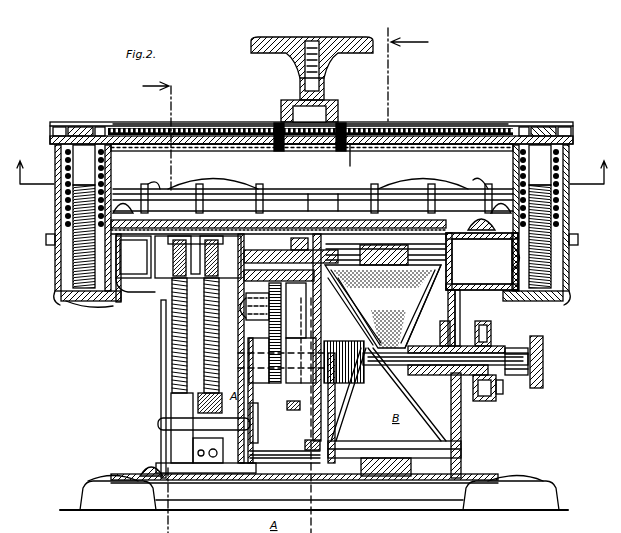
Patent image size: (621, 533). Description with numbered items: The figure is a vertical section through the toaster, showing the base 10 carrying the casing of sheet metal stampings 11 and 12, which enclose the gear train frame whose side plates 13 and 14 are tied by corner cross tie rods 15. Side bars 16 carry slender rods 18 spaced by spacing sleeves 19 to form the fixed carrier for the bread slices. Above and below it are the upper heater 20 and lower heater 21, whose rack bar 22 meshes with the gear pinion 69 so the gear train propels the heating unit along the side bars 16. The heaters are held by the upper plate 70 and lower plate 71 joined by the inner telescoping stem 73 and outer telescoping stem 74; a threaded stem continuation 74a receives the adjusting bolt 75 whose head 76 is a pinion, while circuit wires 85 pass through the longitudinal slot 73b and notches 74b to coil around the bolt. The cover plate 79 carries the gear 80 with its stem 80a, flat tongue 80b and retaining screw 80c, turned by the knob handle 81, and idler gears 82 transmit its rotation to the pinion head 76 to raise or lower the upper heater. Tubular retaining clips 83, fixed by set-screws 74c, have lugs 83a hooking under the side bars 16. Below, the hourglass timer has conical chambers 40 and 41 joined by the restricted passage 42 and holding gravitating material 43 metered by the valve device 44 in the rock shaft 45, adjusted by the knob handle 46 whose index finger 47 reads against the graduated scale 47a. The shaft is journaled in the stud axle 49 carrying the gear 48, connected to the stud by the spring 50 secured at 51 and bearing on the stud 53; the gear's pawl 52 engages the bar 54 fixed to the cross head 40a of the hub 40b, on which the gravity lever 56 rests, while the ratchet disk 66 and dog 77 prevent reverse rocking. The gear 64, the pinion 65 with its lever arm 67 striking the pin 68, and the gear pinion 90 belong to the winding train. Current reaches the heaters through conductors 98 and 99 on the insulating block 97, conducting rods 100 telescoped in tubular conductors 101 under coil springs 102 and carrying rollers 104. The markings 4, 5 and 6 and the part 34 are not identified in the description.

The section line 4 is at (315, 216).
The section line 5 is at (415, 75).
The section line 6 is at (149, 135).
The base 10 is at (490, 470).
The sheet metal stamping 11 is at (163, 388).
The sheet metal stamping 12 is at (480, 416).
The side plate 13 is at (253, 348).
The side plate 14 is at (453, 418).
The corner cross tie rod 15 is at (246, 510).
The side bar 16 is at (65, 298).
The slender rod 18 is at (313, 188).
The spacing sleeve 19 is at (318, 180).
The upper heater 20 is at (345, 143).
The lower heater 21 is at (316, 189).
The rack bar 22 is at (290, 180).
The bottom plate 34 is at (394, 458).
The conical chamber 40 is at (448, 296).
The cross head 40a is at (388, 325).
The hub 40b is at (353, 408).
The conical chamber 41 is at (378, 450).
The restricted passage 42 is at (420, 290).
The gravitating material 43 is at (362, 311).
The valve device 44 is at (388, 394).
The rock shaft 45 is at (448, 390).
The knob handle 46 is at (538, 340).
The index finger 47 is at (500, 340).
The graduated scale 47a is at (480, 313).
The gear 48 is at (306, 412).
The stud axle 49 is at (283, 351).
The spring 50 is at (324, 415).
The spring securing point 51 is at (352, 330).
The spring-actuated pawl 52 is at (280, 451).
The stud 53 is at (306, 310).
The diametrically extending bar 54 is at (350, 311).
The lever 56 is at (447, 318).
The gear 64 is at (232, 326).
The pinion 65 is at (262, 423).
The ratchet disk 66 is at (516, 395).
The lever arm 67 is at (295, 408).
The pin 68 is at (275, 375).
The gear pinion 69 is at (338, 182).
The upper plate 70 is at (508, 128).
The lower plate 71 is at (483, 261).
The inner telescoping tubular stem 73 is at (47, 200).
The longitudinal slot 73b is at (104, 164).
The outer telescoping tubular stem 74 is at (53, 214).
The threaded tubular stem continuation 74a is at (47, 285).
The notch 74b is at (112, 128).
The set-screw 74c is at (38, 231).
The threaded tie and adjusting bolt 75 is at (53, 248).
The bolt head 76 is at (78, 118).
The dog 77 is at (372, 262).
The cover plate 79 is at (465, 114).
The gear 80 is at (345, 126).
The stem and journal 80a is at (290, 106).
The flat tongue 80b is at (312, 130).
The headed retaining screw 80c is at (303, 34).
The operating knob handle 81 is at (290, 60).
The idler gear 82 is at (195, 122).
The tubular retaining clip 83 is at (100, 294).
The lug 83a is at (106, 298).
The circuit wire 85 is at (47, 146).
The gear pinion 90 is at (466, 205).
The insulating block 97 is at (198, 465).
The conductor 98 is at (190, 447).
The conductor 99 is at (192, 401).
The conducting rod 100 is at (165, 362).
The tubular conductor 101 is at (172, 312).
The coil spring 102 is at (200, 328).
The roller 104 is at (160, 272).